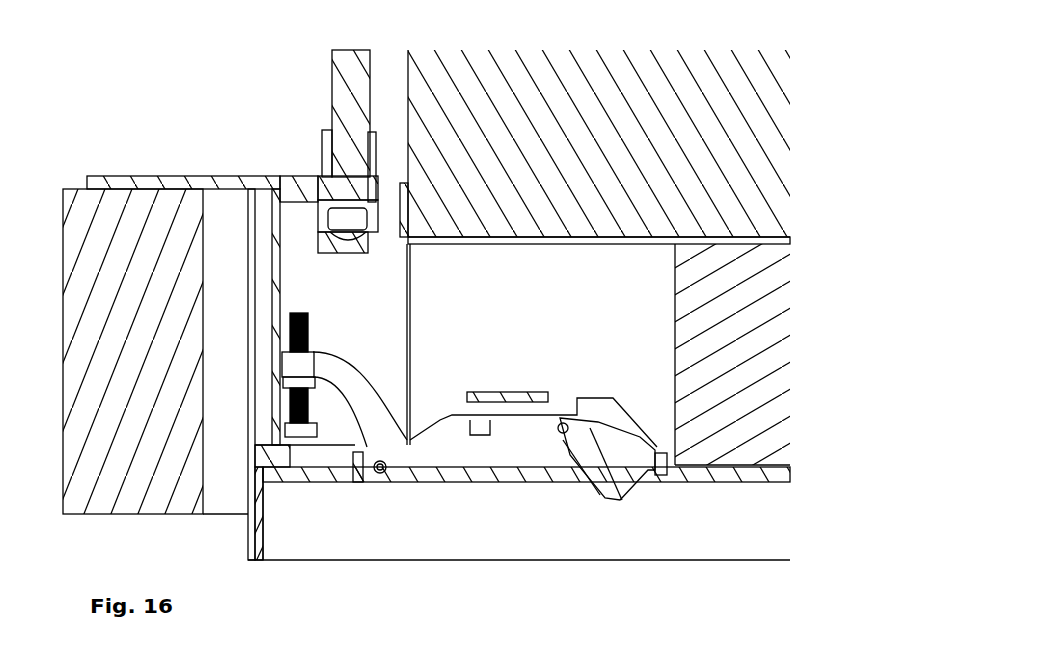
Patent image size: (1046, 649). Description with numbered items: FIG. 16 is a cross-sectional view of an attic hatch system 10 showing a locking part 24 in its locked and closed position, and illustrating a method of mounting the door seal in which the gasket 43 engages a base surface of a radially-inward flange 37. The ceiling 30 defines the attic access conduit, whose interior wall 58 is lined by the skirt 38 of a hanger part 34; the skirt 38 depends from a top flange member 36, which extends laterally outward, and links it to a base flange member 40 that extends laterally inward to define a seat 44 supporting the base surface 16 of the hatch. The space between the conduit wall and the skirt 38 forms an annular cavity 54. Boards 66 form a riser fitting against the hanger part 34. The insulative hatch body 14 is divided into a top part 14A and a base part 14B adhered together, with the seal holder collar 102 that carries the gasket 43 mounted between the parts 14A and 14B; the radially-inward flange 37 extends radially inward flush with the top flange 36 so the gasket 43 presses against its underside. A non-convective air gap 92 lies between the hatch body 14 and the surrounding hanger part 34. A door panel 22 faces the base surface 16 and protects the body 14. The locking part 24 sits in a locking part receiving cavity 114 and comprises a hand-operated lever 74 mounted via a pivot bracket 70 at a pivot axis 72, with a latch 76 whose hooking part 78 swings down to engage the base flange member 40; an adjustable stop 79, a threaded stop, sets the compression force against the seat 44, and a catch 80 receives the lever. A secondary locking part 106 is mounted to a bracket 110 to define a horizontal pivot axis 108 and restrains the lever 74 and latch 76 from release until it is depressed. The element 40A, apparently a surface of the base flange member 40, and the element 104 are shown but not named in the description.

The attic hatch system 10 is at (114, 64).
The insulative hatch body 14 is at (455, 70).
The top part of hatch body 14A is at (780, 142).
The base part of hatch body 14B is at (775, 338).
The base surface 16 is at (553, 245).
The door panel 22 is at (725, 478).
The locking part 24 is at (583, 543).
The ceiling 30 is at (110, 480).
The hanger part 34 is at (200, 185).
The top flange member 36 is at (130, 176).
The radially-inward flange 37 is at (317, 177).
The skirt 38 is at (248, 250).
The base flange member 40 is at (313, 453).
The bottom frame surface 40A is at (775, 592).
The gasket 43 is at (320, 210).
The seat 44 is at (292, 443).
The annular cavity 54 is at (228, 493).
The interior wall of attic access conduit 58 is at (205, 297).
The boards 66 is at (338, 90).
The pivot bracket 70 is at (375, 478).
The pivot axis 72 is at (390, 480).
The hand-operated lever 74 is at (470, 490).
The latch 76 is at (322, 365).
The hooking part 78 is at (367, 410).
The adjustable stop 79 is at (308, 332).
The catch 80 is at (260, 467).
The non-convective air gap 92 is at (377, 95).
The seal holder collar 102 is at (388, 210).
The cavity wall 104 is at (380, 378).
The secondary locking part 106 is at (641, 412).
The pivot axis of secondary locking part 108 is at (560, 420).
The bracket 110 is at (593, 490).
The locking part receiving cavity 114 is at (520, 295).